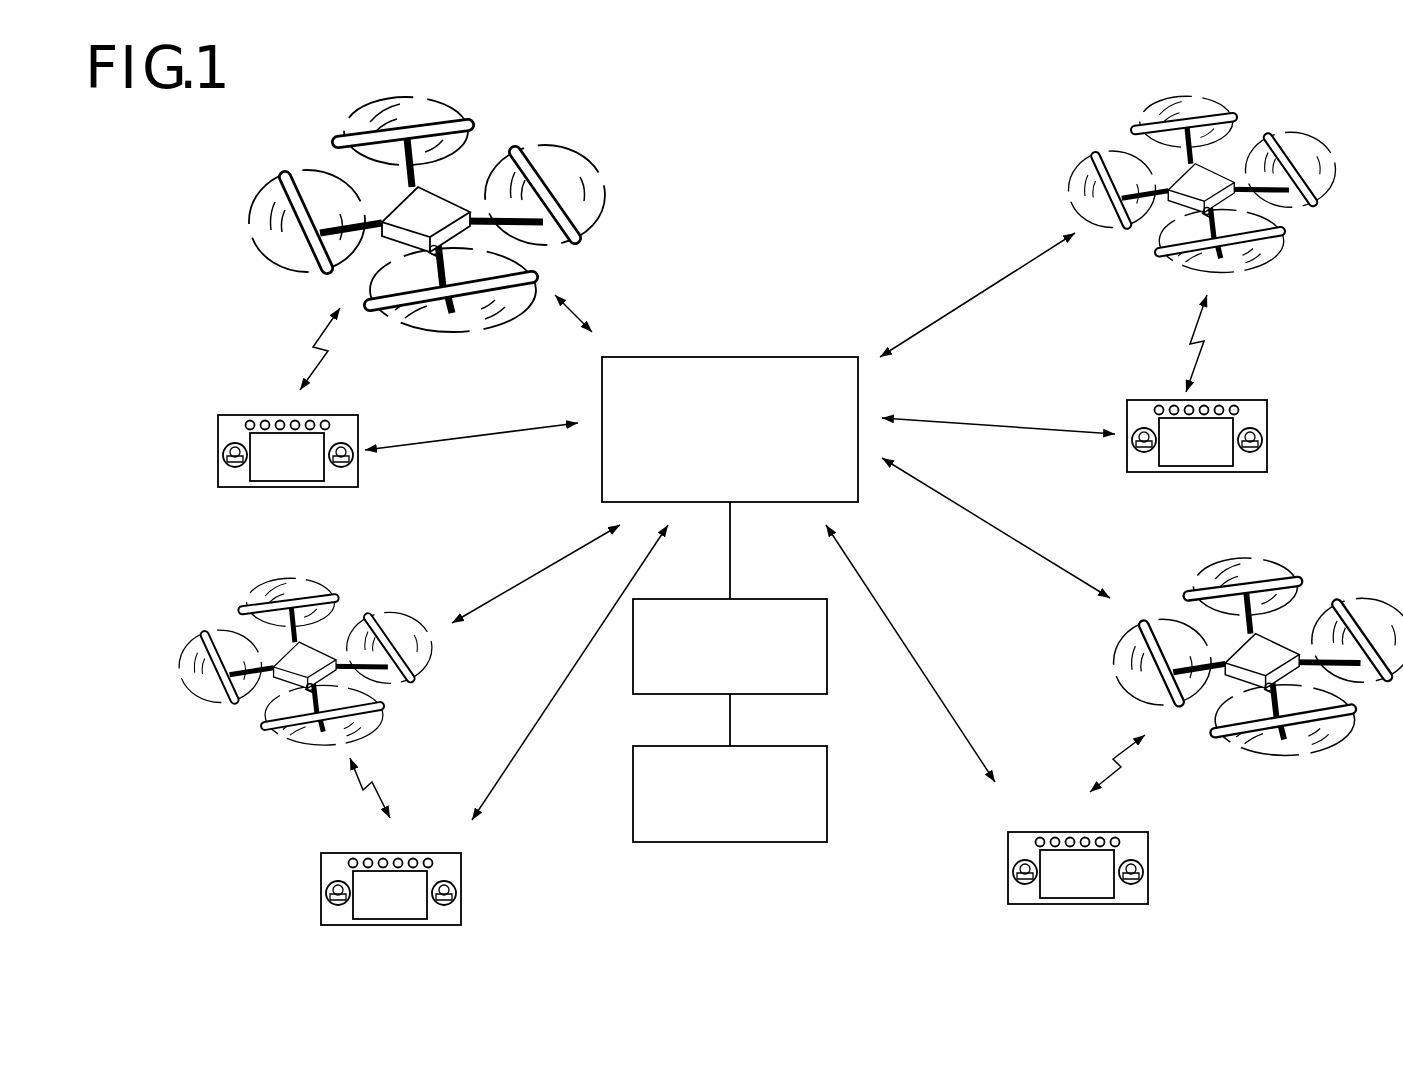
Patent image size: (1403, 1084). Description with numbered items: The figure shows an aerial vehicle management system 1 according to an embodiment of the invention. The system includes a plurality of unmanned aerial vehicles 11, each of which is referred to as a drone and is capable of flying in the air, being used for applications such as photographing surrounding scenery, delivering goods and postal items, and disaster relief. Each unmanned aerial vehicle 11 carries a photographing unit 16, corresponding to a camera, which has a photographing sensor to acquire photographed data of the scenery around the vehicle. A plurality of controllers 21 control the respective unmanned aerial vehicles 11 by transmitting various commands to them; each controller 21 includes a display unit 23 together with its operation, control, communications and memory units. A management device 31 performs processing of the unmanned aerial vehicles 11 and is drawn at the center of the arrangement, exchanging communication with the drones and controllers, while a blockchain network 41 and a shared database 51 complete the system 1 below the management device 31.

The aerial vehicle management system 1 is at (863, 110).
The unmanned aerial vehicle 11 is at (498, 130).
The photographing unit 16 is at (440, 249).
The controller 21 is at (333, 412).
The display unit 23 is at (288, 467).
The management device 31 is at (776, 355).
The blockchain network 41 is at (760, 598).
The shared database 51 is at (760, 745).